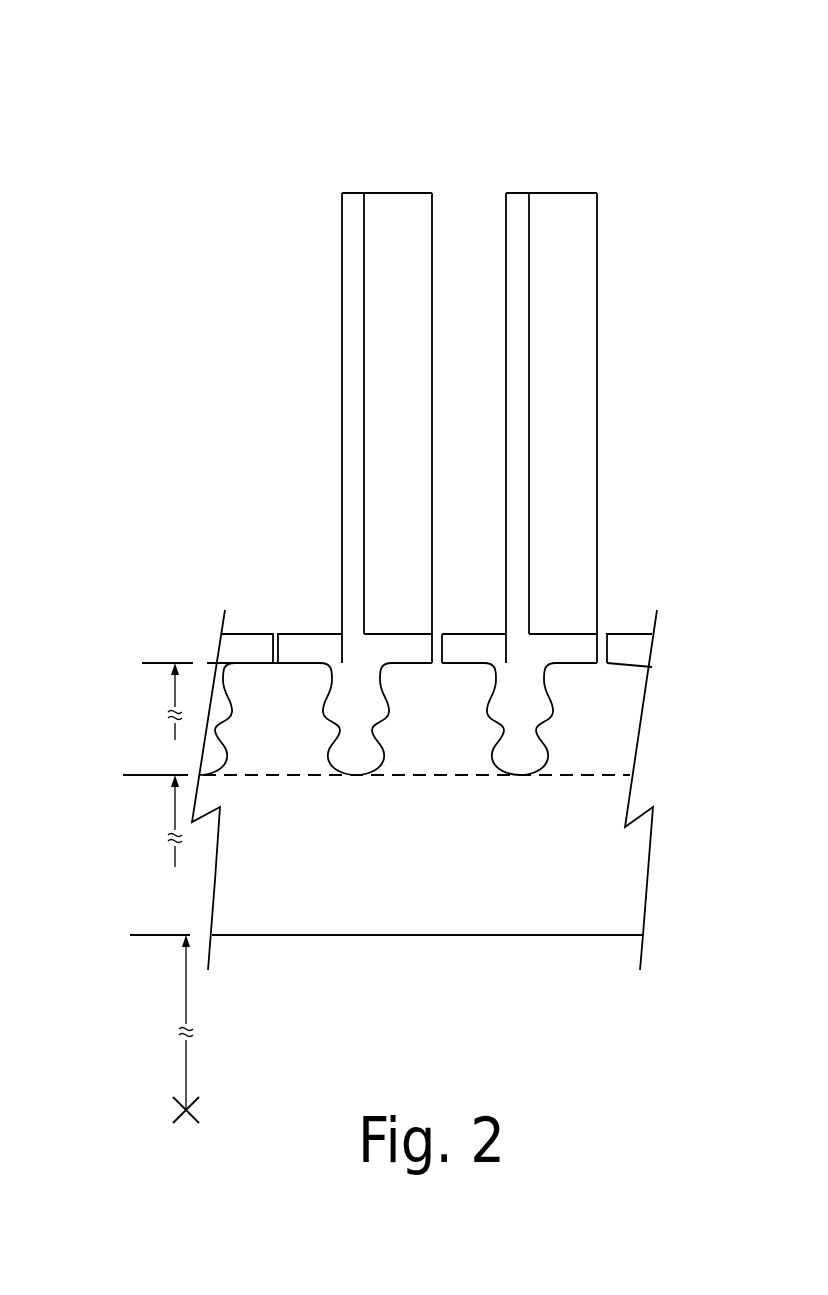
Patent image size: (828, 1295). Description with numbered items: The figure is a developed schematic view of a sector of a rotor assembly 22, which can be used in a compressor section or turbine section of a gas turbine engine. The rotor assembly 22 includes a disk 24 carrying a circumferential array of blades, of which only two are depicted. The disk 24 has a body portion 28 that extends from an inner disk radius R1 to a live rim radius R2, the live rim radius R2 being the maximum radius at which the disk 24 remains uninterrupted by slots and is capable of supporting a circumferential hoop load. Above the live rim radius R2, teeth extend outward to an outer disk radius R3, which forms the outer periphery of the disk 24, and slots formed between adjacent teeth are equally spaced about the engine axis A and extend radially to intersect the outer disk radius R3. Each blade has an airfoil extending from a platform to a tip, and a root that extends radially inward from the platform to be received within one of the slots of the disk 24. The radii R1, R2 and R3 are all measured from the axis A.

The rotor assembly 22 is at (148, 203).
The disk 24 is at (393, 980).
The body portion 28 is at (490, 908).
The inner disk radius R1 is at (141, 1015).
The live rim radius R2 is at (133, 814).
The outer disk radius R3 is at (376, 694).
The axis A is at (192, 1112).